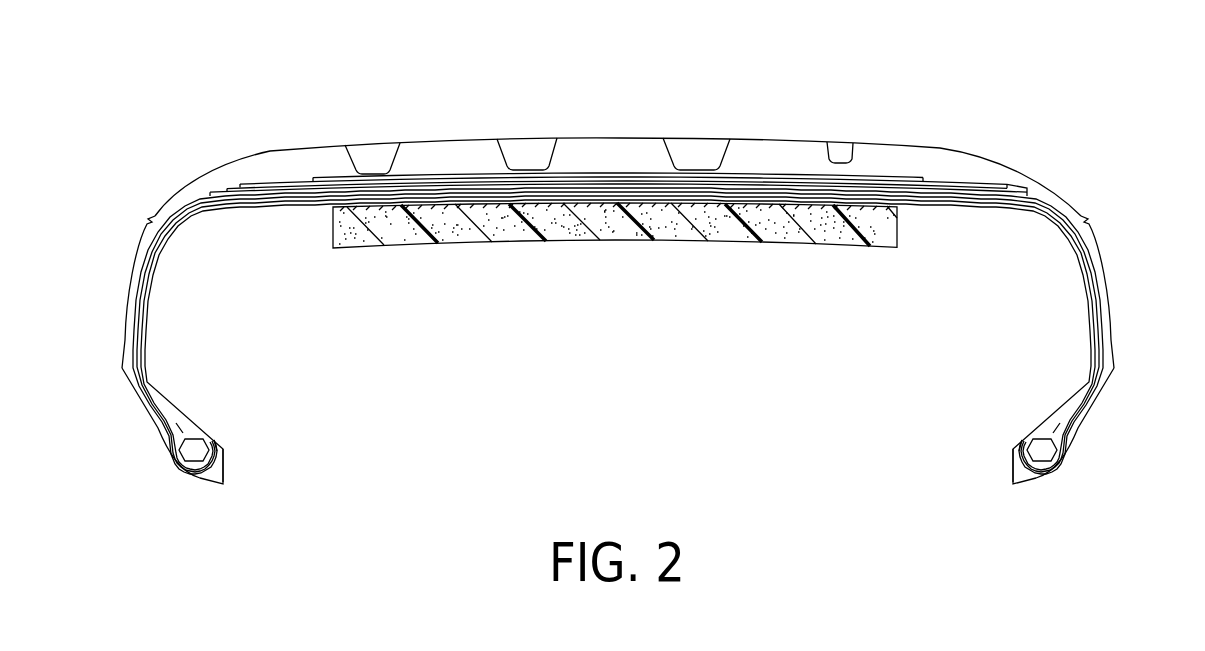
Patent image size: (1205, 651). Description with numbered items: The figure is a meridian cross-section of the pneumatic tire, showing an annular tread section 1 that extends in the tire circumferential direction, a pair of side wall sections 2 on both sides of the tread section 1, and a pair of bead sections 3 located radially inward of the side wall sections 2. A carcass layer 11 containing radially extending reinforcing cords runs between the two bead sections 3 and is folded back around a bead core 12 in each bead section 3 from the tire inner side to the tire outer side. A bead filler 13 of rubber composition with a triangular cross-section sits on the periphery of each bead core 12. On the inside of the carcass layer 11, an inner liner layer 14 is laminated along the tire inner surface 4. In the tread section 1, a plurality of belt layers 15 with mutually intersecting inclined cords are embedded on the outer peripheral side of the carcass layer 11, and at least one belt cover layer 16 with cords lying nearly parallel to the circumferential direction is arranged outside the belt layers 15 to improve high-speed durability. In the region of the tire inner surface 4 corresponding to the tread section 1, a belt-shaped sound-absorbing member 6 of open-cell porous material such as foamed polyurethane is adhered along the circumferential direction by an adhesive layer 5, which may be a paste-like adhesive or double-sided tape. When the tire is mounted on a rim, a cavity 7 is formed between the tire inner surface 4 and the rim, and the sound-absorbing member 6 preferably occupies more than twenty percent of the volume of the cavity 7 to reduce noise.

The tread section 1 is at (787, 140).
The side wall section 2 is at (125, 283).
The bead section 3 is at (163, 433).
The tire inner surface 4 is at (272, 213).
The adhesive layer 5 is at (452, 205).
The sound-absorbing member 6 is at (610, 225).
The cavity 7 is at (762, 351).
The carcass layer 11 is at (1047, 218).
The bead core 12 is at (200, 447).
The bead filler 13 is at (190, 417).
The inner liner layer 14 is at (227, 450).
The belt layer 15 is at (975, 197).
The belt cover layer 16 is at (962, 163).